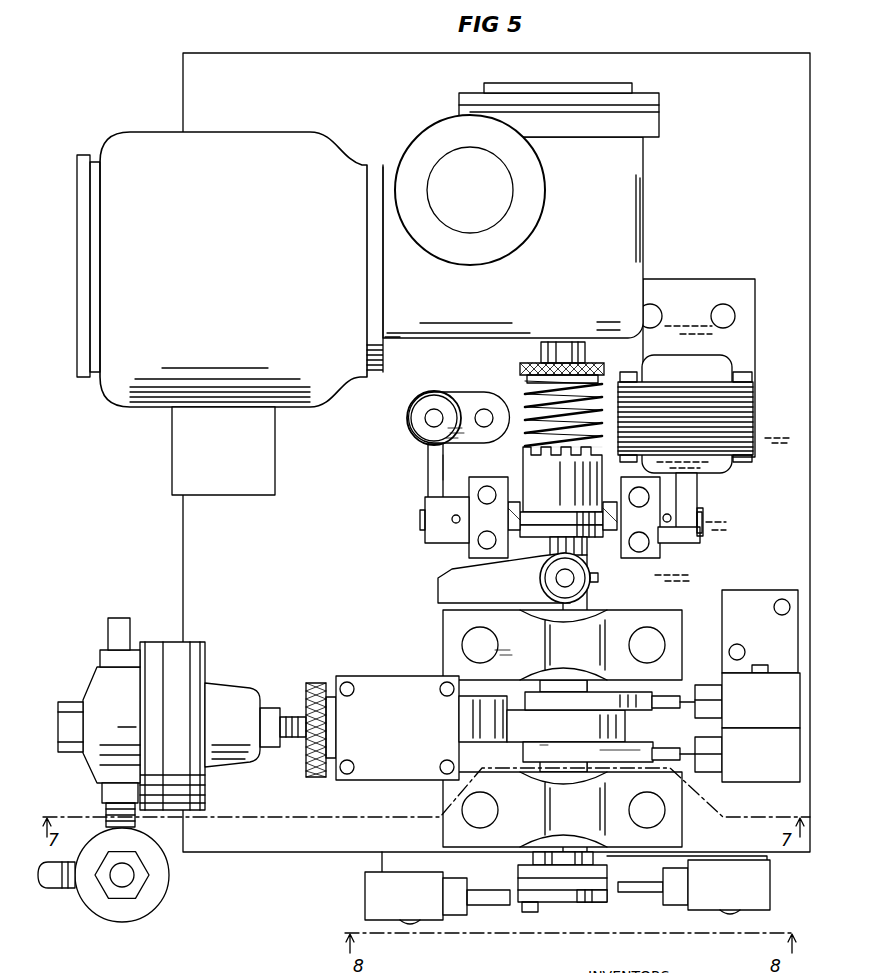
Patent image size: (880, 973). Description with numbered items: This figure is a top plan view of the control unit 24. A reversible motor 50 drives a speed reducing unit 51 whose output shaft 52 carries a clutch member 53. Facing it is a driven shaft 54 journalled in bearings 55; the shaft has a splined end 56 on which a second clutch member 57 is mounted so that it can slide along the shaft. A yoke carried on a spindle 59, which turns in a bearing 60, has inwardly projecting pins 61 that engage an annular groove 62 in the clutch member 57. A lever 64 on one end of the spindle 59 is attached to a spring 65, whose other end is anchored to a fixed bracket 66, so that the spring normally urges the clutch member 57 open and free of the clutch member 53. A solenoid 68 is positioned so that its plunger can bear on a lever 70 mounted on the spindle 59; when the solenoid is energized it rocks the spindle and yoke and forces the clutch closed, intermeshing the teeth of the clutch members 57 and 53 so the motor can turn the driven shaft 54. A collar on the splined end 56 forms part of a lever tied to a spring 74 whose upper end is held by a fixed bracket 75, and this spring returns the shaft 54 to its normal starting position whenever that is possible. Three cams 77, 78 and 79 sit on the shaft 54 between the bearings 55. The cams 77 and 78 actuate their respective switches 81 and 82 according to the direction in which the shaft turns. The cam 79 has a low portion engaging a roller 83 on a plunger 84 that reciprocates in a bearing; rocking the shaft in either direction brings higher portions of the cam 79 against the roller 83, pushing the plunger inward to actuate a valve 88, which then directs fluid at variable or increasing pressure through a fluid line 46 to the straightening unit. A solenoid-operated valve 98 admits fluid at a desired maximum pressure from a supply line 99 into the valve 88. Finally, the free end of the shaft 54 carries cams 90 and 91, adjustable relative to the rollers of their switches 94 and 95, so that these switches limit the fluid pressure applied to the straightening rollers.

The control unit 24 is at (291, 25).
The reversible motor 50 is at (156, 140).
The speed reducing unit 51 is at (650, 166).
The output shaft 52 is at (573, 330).
The clutch member 53 is at (526, 451).
The driven shaft 54 is at (590, 612).
The bearings 55 is at (516, 642).
The splined end 56 is at (586, 545).
The clutch member 57 is at (533, 480).
The spindle 59 is at (702, 525).
The bearing 60 is at (480, 534).
The pins 61 is at (520, 514).
The annular groove 62 is at (576, 513).
The lever 64 is at (430, 462).
The spring 65 is at (437, 394).
The fixed bracket 66 is at (452, 410).
The solenoid 68 is at (745, 406).
The lever 70 is at (694, 501).
The spring 74 is at (598, 577).
The fixed bracket 75 is at (437, 586).
The cam 77 is at (641, 692).
The cam 78 is at (645, 746).
The cam 79 is at (540, 726).
The switch 81 is at (735, 683).
The switch 82 is at (728, 735).
The roller 83 is at (465, 718).
The plunger 84 is at (334, 722).
The valve 88 is at (185, 652).
The fluid line 46 is at (112, 633).
The valve 98 is at (128, 879).
The supply line 99 is at (42, 888).
The switch 94 is at (377, 889).
The cam 90 is at (522, 900).
The cam 91 is at (581, 900).
The switch 95 is at (703, 900).